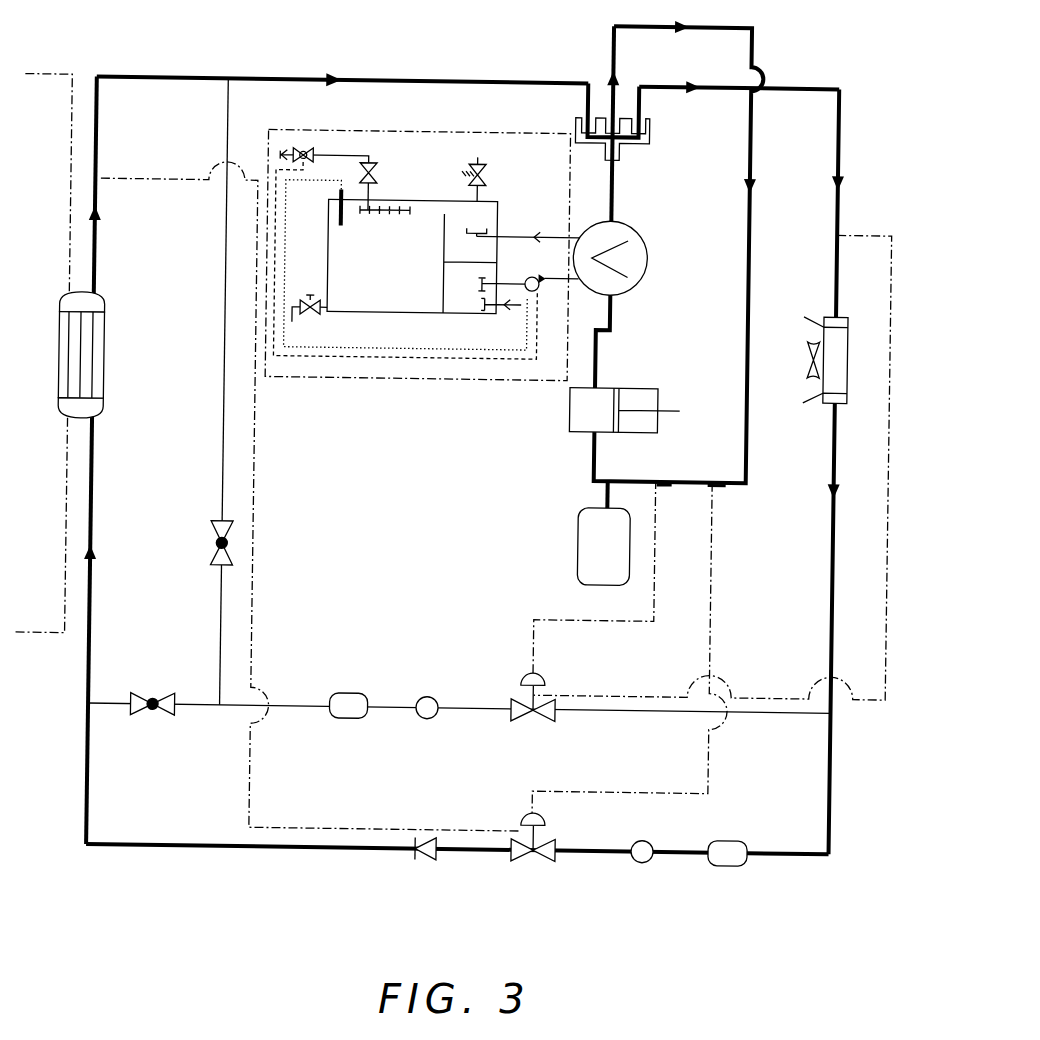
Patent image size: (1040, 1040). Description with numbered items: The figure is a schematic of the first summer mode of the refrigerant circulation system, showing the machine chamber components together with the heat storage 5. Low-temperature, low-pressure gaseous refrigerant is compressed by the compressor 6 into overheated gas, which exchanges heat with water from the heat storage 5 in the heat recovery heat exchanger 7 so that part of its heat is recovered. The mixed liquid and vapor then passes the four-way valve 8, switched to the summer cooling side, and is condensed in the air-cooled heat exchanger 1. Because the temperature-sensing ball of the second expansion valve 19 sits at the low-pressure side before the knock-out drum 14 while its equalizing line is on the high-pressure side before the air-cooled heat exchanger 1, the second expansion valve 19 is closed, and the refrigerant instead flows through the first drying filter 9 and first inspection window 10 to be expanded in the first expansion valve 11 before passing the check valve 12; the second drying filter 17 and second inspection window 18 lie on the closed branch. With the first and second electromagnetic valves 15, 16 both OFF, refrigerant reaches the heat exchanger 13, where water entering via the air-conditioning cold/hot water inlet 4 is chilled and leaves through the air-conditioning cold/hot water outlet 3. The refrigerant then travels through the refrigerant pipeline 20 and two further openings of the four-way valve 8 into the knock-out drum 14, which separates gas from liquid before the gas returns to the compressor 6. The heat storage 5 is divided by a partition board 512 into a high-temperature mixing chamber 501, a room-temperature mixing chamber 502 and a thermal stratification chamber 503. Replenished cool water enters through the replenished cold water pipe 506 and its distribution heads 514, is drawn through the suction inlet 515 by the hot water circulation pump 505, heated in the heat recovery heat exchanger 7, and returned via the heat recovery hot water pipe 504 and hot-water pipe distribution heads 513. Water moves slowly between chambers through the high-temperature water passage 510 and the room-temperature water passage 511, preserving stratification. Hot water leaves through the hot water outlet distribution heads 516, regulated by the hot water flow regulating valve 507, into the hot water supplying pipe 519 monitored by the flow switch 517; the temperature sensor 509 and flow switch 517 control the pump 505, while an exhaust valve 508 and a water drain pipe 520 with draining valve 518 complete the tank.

The air-cooled heat exchanger 1 is at (807, 359).
The air-conditioning cold/hot water outlet 3 is at (17, 72).
The air-conditioning cold/hot water inlet 4 is at (20, 645).
The heat storage 5 is at (420, 386).
The compressor 6 is at (567, 407).
The heat recovery heat exchanger 7 is at (646, 245).
The four-way valve 8 is at (644, 131).
The first drying filter 9 is at (734, 863).
The first inspection window 10 is at (647, 861).
The first expansion valve 11 is at (540, 857).
The check valve 12 is at (430, 861).
The heat exchanger 13 is at (104, 362).
The knock-out drum 14 is at (576, 546).
The first electromagnetic valve 15 is at (212, 546).
The second electromagnetic valve 16 is at (157, 716).
The second drying filter 17 is at (352, 721).
The second inspection window 18 is at (430, 720).
The second expansion valve 19 is at (540, 717).
The refrigerant pipeline 20 is at (385, 80).
The high-temperature mixing chamber 501 is at (470, 264).
The room-temperature mixing chamber 502 is at (455, 272).
The thermal stratification chamber 503 is at (412, 256).
The heat recovery hot water pipe 504 is at (545, 236).
The hot water circulation pump 505 is at (516, 279).
The replenished cold water pipe 506 is at (525, 324).
The hot water flow regulating valve 507 is at (376, 171).
The exhaust valve 508 is at (482, 176).
The temperature sensor 509 is at (342, 226).
The high-temperature water passage 510 is at (441, 230).
The room-temperature water passage 511 is at (441, 300).
The partition board 512 is at (441, 264).
The hot-water pipe distribution heads 513 is at (476, 222).
The replenished cold water pipe distribution heads 514 is at (484, 304).
The suction inlet 515 is at (485, 286).
The hot water outlet distribution heads 516 is at (374, 217).
The flow switch 517 is at (309, 145).
The draining valve 518 is at (294, 300).
The hot water supplying pipe 519 is at (283, 143).
The water drain pipe 520 is at (301, 330).